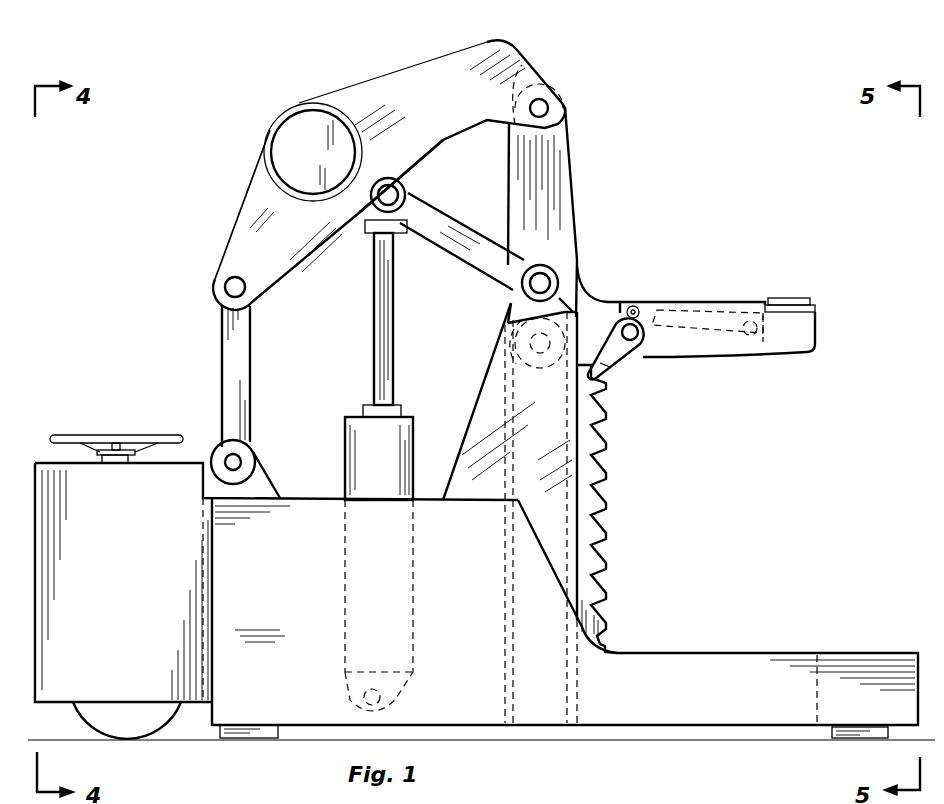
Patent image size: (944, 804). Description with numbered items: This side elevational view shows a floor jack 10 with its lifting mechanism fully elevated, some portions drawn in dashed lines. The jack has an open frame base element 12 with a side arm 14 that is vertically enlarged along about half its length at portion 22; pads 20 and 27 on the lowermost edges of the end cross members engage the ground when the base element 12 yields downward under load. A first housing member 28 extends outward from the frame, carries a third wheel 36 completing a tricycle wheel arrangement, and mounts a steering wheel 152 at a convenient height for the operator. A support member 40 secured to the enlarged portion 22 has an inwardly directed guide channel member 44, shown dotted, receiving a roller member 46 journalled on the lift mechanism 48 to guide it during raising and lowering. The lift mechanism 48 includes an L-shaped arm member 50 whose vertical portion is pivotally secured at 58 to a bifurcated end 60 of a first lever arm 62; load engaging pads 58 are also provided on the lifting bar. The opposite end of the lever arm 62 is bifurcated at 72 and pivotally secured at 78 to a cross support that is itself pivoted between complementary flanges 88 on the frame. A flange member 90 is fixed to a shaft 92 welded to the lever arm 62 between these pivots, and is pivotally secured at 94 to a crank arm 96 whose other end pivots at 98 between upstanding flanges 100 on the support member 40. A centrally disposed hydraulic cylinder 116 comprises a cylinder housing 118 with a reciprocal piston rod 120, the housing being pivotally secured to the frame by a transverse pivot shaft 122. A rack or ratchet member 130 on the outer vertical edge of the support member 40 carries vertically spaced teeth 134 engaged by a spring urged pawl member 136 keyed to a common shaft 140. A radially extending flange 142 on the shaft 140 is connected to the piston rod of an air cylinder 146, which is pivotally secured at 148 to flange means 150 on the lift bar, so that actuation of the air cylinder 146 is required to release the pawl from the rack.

The floor jack 10 is at (195, 402).
The base element 12 is at (665, 668).
The side arm 14 is at (715, 702).
The pad member 20 is at (843, 731).
The vertically enlarged portion 22 is at (530, 592).
The pad 27 is at (246, 732).
The first housing member 28 is at (70, 520).
The third wheel 36 is at (147, 720).
The support member 40 is at (590, 462).
The guide channel member 44 is at (508, 383).
The roller member 46 is at (528, 343).
The lift mechanism 48 is at (582, 186).
The L-shaped arm member 50 is at (600, 308).
The pivotal connection 58 is at (545, 105).
The bifurcated end 60 is at (533, 78).
The first lever arm 62 is at (413, 83).
The bifurcated end 72 is at (215, 283).
The pivotal connection 78 is at (228, 292).
The complementary flanges 88 is at (264, 493).
The flange member 90 is at (390, 163).
The shaft 92 is at (303, 130).
The pivotal connection 94 is at (399, 195).
The crank arm 96 is at (458, 232).
The pivotal connection 98 is at (550, 282).
The upstanding flange 100 is at (515, 310).
The hydraulic cylinder 116 is at (338, 441).
The cylinder housing 118 is at (380, 452).
The piston rod 120 is at (378, 328).
The pivot shaft 122 is at (386, 695).
The rack or ratchet member 130 is at (591, 503).
The teeth 134 is at (598, 616).
The spring urged pawl member 136 is at (617, 362).
The common shaft 140 is at (640, 347).
The radially outwardly extending flange 142 is at (623, 300).
The air cylinder 146 is at (702, 326).
The pivotal connection 148 is at (753, 337).
The flange means 150 is at (758, 300).
The steering wheel 152 is at (125, 438).